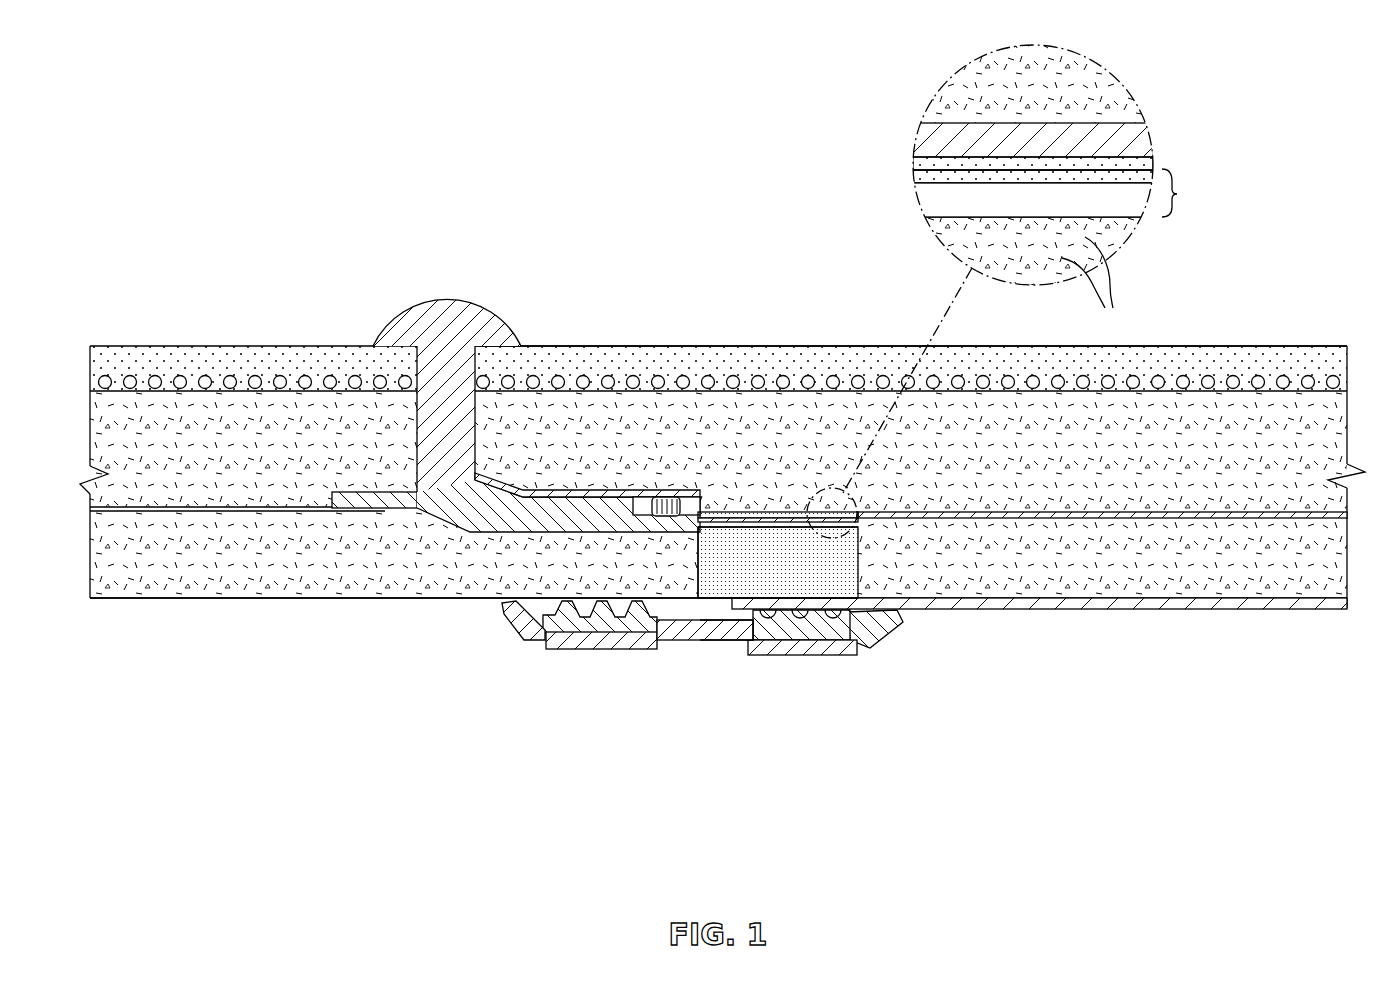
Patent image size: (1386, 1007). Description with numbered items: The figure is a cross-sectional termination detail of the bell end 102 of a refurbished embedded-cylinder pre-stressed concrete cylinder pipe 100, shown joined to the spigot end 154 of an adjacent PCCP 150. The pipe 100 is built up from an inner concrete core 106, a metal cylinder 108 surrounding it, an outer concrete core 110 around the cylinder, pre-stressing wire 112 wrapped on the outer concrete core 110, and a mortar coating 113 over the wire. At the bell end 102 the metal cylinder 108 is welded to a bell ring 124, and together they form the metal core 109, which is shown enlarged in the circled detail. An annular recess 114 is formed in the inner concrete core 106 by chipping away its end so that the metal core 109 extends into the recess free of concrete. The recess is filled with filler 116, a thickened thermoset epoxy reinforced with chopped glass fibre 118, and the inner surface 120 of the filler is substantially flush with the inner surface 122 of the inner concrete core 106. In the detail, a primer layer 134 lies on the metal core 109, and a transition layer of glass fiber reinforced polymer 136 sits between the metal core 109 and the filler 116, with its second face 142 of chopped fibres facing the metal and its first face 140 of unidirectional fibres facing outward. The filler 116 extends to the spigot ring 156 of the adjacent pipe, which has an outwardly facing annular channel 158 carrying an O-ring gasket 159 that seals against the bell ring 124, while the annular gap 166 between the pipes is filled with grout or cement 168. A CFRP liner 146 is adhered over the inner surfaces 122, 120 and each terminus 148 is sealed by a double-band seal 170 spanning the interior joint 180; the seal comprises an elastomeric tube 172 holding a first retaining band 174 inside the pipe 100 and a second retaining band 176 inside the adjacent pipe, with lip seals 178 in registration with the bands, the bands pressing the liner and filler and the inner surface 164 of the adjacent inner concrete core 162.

The pre-stressed concrete cylinder pipe 100 is at (653, 237).
The bell end 102 is at (580, 343).
The inner concrete core 106 is at (1045, 566).
The metal cylinder 108 is at (1150, 519).
The metal core 109 is at (800, 480).
The outer concrete core 110 is at (1110, 466).
The pre-stressing wire 112 is at (708, 375).
The mortar coating 113 is at (1232, 346).
The annular recess 114 is at (864, 556).
The filler 116 is at (730, 508).
The chopped glass fibre 118 is at (1114, 278).
The inner surface of the filler 120 is at (700, 607).
The inner surface of the inner concrete core 122 is at (1227, 609).
The bell ring 124 is at (592, 490).
The primer layer 134 is at (1148, 163).
The transition layer of glass fiber reinforced polymer 136 is at (753, 492).
The first face of the glass fibre fabric 140 is at (933, 205).
The second face of the glass fibre fabric 142 is at (933, 176).
The CFRP liner 146 is at (1027, 604).
The terminus of the CFRP liner 148 is at (733, 619).
The adjacent PCCP 150 is at (207, 277).
The spigot end of the adjacent PCCP 154 is at (511, 693).
The spigot ring of the adjacent PCCP 156 is at (493, 523).
The annular channel 158 is at (656, 480).
The O-ring gasket 159 is at (670, 490).
The inner concrete core of the adjacent PCCP 162 is at (228, 566).
The inner surface of the inner concrete core of the adjacent PCCP 164 is at (268, 599).
The annular gap 166 is at (412, 428).
The grout or cement 168 is at (428, 313).
The double-band seal 170 is at (585, 660).
The elastomeric tube 172 is at (670, 634).
The first retaining band 174 is at (838, 656).
The second retaining band 176 is at (560, 653).
The lip seal 178 is at (517, 635).
The interior joint 180 is at (694, 563).